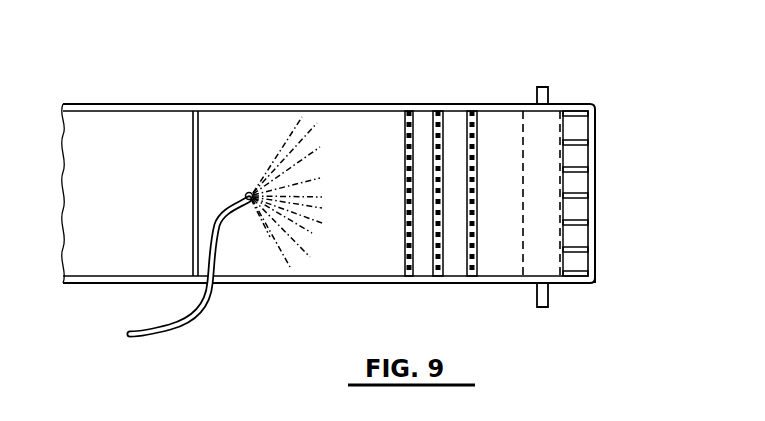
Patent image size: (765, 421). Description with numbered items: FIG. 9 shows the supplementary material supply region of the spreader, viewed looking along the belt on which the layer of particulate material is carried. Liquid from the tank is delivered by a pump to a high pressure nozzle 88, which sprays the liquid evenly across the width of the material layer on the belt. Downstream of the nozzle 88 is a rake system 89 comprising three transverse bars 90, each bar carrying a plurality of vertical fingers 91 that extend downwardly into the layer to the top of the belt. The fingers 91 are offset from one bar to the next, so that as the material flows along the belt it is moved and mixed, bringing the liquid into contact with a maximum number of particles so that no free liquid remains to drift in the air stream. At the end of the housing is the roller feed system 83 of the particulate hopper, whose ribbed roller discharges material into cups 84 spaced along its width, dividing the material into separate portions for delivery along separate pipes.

The roller feed system 83 is at (542, 135).
The cups 84 is at (604, 240).
The high pressure nozzle 88 is at (248, 191).
The rake system 89 is at (426, 178).
The transverse bars 90 is at (402, 127).
The vertical fingers 91 is at (404, 204).